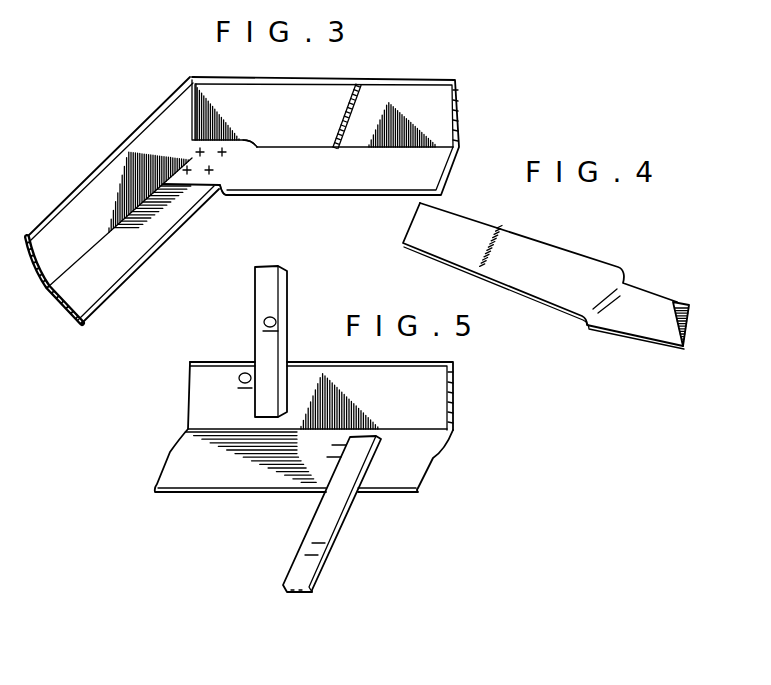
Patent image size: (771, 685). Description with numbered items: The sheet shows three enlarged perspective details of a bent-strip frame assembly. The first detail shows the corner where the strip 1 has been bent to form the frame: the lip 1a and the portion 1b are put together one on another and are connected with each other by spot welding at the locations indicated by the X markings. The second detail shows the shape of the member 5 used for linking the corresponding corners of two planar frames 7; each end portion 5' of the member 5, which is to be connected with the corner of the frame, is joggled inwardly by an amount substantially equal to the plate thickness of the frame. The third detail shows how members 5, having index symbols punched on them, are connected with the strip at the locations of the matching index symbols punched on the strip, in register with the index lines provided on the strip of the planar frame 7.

In FIG. 3, the strip 1 is at (399, 89).
In FIG. 3, the lip 1a is at (227, 165).
In FIG. 3, the portion 1b is at (220, 195).
In FIG. 4, the member 5 is at (546, 276).
In FIG. 5, the member 5 is at (320, 429).
In FIG. 4, the end portion 5' is at (641, 296).
In FIG. 5, the planar frame 7 is at (216, 361).